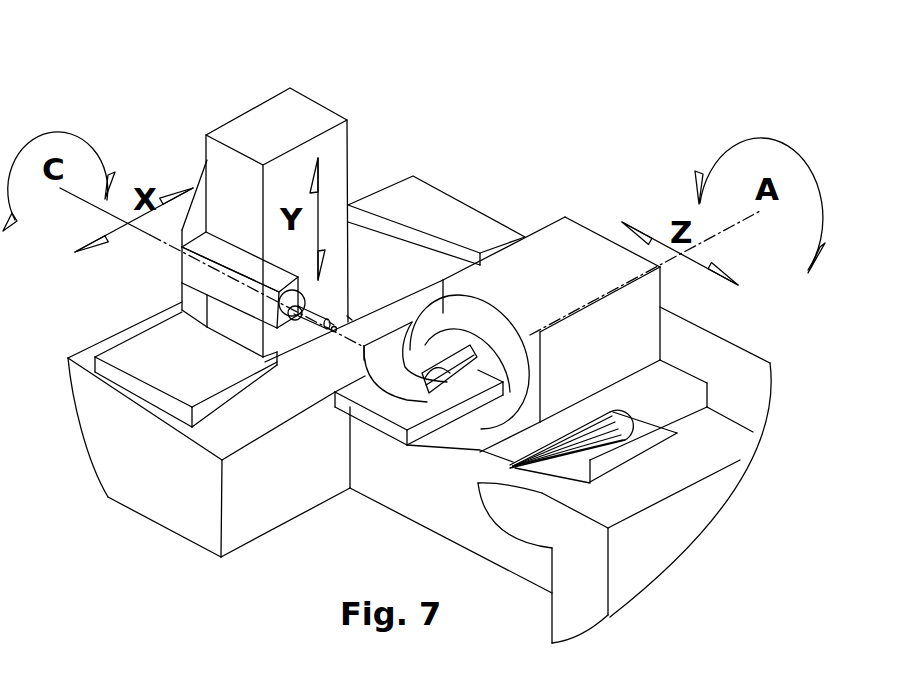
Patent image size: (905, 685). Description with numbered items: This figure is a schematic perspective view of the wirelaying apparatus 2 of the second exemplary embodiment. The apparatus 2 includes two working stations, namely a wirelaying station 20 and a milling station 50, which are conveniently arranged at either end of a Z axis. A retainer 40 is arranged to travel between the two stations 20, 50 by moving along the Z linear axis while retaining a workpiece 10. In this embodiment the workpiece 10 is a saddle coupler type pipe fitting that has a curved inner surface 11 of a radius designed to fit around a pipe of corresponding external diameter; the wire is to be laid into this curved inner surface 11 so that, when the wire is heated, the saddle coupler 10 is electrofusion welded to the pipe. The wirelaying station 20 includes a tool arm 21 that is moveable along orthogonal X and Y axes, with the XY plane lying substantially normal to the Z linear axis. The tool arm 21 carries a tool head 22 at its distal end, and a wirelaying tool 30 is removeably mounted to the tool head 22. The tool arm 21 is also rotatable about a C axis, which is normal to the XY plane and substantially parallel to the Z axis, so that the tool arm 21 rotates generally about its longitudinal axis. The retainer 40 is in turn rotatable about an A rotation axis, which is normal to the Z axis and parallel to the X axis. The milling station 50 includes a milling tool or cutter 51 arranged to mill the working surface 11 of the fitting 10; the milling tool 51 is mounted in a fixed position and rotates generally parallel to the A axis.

The wirelaying apparatus 2 is at (167, 485).
The workpiece 10 is at (452, 362).
The curved inner surface 11 is at (390, 355).
The wirelaying station 20 is at (282, 125).
The tool arm 21 is at (290, 292).
The tool head 22 is at (338, 311).
The wirelaying tool 30 is at (349, 314).
The retainer 40 is at (387, 428).
The milling station 50 is at (633, 485).
The milling tool 51 is at (588, 432).